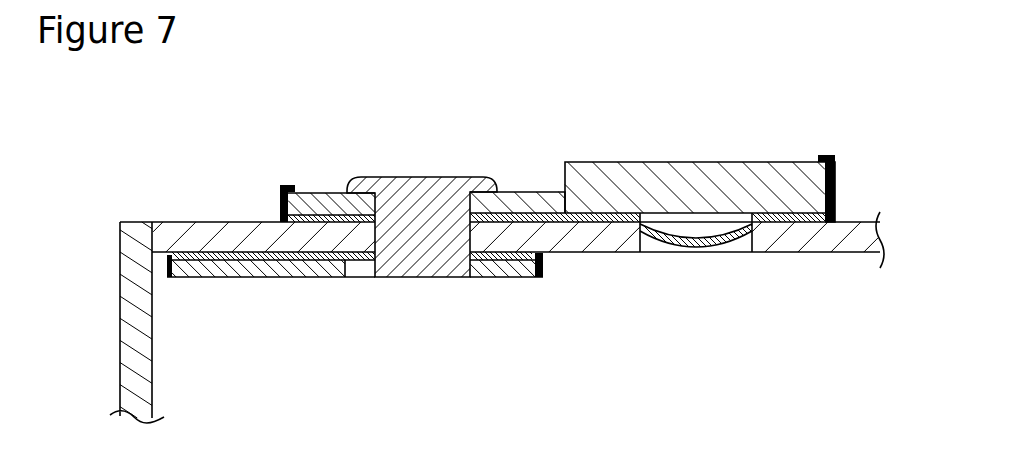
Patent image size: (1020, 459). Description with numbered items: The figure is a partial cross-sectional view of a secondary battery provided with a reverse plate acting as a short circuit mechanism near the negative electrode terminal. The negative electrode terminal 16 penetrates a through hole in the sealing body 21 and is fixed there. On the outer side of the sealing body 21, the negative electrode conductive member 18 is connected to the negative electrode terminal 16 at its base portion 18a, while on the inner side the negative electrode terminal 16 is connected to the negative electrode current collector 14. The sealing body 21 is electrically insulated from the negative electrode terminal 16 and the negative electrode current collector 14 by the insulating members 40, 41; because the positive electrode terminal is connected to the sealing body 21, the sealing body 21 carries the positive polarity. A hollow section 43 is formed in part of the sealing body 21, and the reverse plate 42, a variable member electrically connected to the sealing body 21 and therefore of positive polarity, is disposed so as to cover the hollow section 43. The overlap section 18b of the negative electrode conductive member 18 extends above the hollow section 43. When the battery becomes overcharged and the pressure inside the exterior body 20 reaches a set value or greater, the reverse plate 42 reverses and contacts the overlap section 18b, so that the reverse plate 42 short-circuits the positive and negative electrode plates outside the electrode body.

The negative electrode current collector 14 is at (274, 277).
The negative electrode terminal 16 is at (432, 177).
The negative electrode conductive member 18 is at (665, 88).
The base portion 18a is at (535, 192).
The overlap section 18b is at (670, 162).
The exterior body 20 is at (120, 318).
The sealing body 21 is at (218, 222).
The insulating member 40 is at (322, 192).
The insulating member 41 is at (204, 277).
The reverse plate 42 is at (686, 252).
The hollow section 43 is at (735, 247).